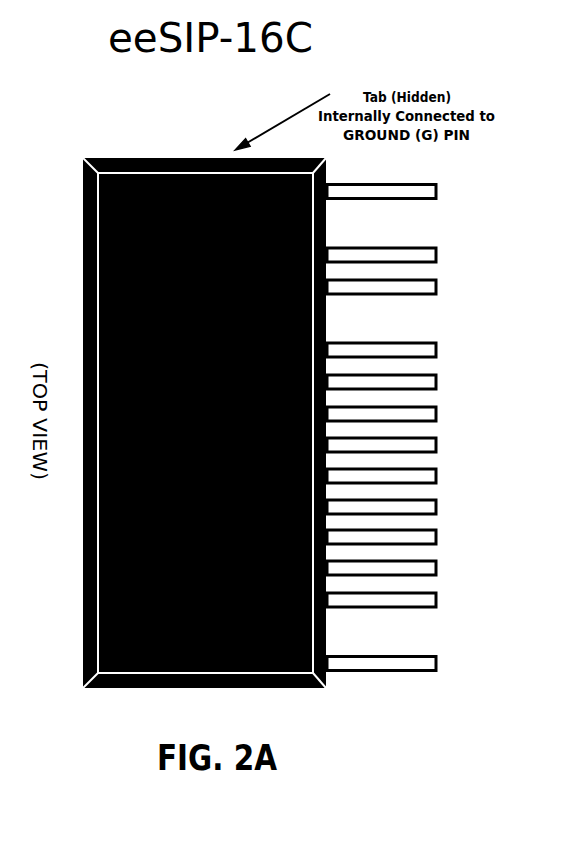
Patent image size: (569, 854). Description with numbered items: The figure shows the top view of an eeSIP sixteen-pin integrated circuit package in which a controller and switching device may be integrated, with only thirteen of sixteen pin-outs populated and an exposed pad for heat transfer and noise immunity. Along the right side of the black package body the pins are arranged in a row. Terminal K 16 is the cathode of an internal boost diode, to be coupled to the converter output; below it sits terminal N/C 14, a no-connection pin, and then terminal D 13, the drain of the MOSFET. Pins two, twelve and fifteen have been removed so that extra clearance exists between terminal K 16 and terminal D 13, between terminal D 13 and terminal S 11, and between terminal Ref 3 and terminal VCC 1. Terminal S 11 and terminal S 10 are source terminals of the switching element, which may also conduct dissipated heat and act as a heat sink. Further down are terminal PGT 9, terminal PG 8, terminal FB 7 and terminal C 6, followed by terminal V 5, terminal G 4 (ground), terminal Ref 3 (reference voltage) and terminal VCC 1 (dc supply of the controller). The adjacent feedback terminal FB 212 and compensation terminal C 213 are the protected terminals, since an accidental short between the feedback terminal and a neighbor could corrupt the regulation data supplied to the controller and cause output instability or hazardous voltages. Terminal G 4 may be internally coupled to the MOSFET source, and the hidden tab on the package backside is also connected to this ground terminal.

The VCC terminal 1 is at (420, 663).
The Ref terminal 3 is at (418, 600).
The G terminal 4 is at (415, 568).
The V terminal 5 is at (415, 537).
The C terminal 6 is at (414, 507).
The FB terminal 7 is at (419, 476).
The PG terminal 8 is at (418, 445).
The PGT terminal 9 is at (421, 414).
The S terminal 10 is at (414, 382).
The S terminal 11 is at (414, 350).
The D terminal 13 is at (415, 287).
The N/C terminal 14 is at (416, 255).
The K terminal 16 is at (415, 192).
The feedback terminal FB 212 is at (446, 461).
The compensation terminal C 213 is at (448, 496).